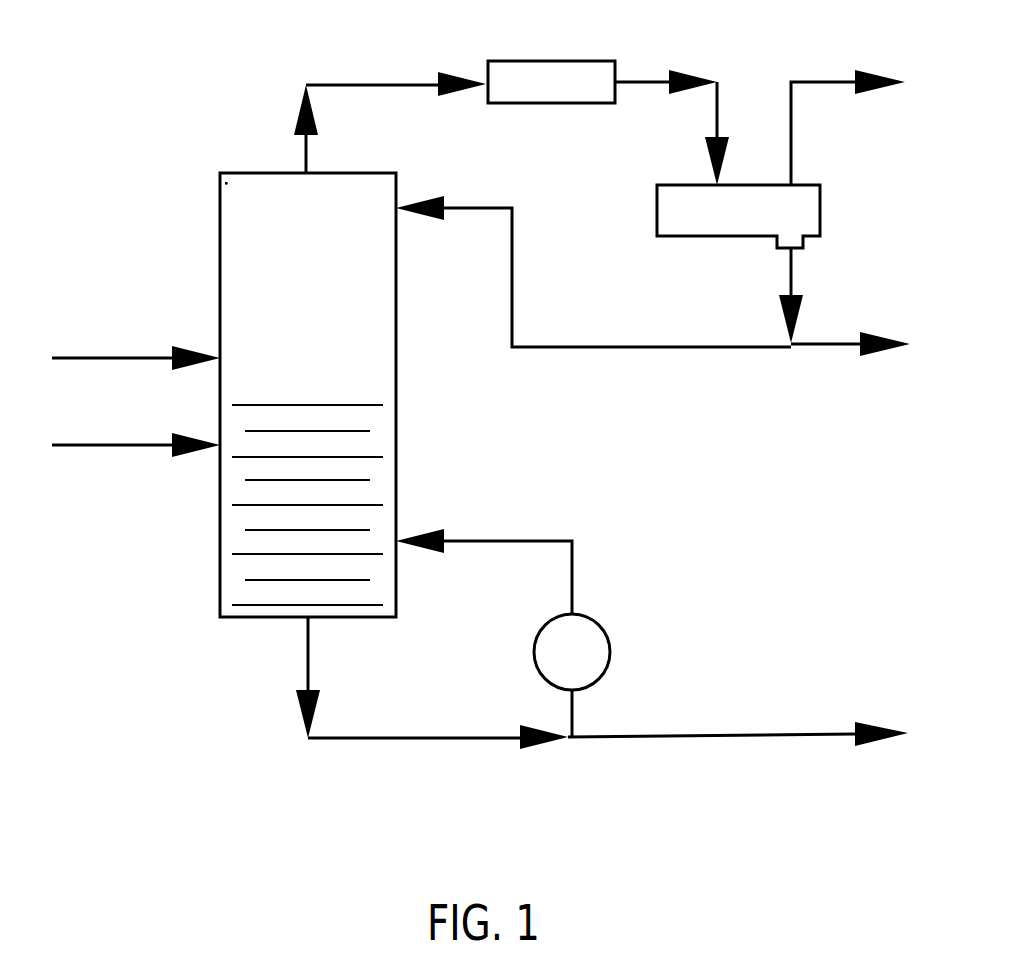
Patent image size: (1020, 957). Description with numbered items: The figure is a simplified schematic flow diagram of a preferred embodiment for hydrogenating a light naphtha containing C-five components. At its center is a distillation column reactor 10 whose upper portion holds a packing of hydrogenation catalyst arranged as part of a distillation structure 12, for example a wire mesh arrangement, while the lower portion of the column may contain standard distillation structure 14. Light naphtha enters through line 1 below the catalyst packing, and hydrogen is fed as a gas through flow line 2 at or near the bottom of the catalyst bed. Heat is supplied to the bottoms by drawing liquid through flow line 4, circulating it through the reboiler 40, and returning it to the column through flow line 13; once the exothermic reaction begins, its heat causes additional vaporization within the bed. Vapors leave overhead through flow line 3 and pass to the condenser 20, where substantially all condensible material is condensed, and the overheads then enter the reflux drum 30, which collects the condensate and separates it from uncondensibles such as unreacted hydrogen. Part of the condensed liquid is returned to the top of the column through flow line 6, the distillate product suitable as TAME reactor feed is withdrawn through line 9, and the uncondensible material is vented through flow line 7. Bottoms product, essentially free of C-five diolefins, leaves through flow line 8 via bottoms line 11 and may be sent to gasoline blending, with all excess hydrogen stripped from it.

The line 1 is at (118, 445).
The flow line 2 is at (120, 358).
The flow line 3 is at (404, 84).
The flow line 4 is at (572, 717).
The flow line 6 is at (680, 346).
The flow line 7 is at (832, 82).
The flow line 8 is at (735, 736).
The line 9 is at (813, 344).
The distillation column reactor 10 is at (396, 381).
The bottoms line 11 is at (392, 738).
The distillation structure 12 is at (343, 278).
The flow line 13 is at (572, 549).
The standard distillation structure 14 is at (328, 471).
The condenser 20 is at (584, 61).
The reflux drum 30 is at (657, 197).
The reboiler 40 is at (599, 624).